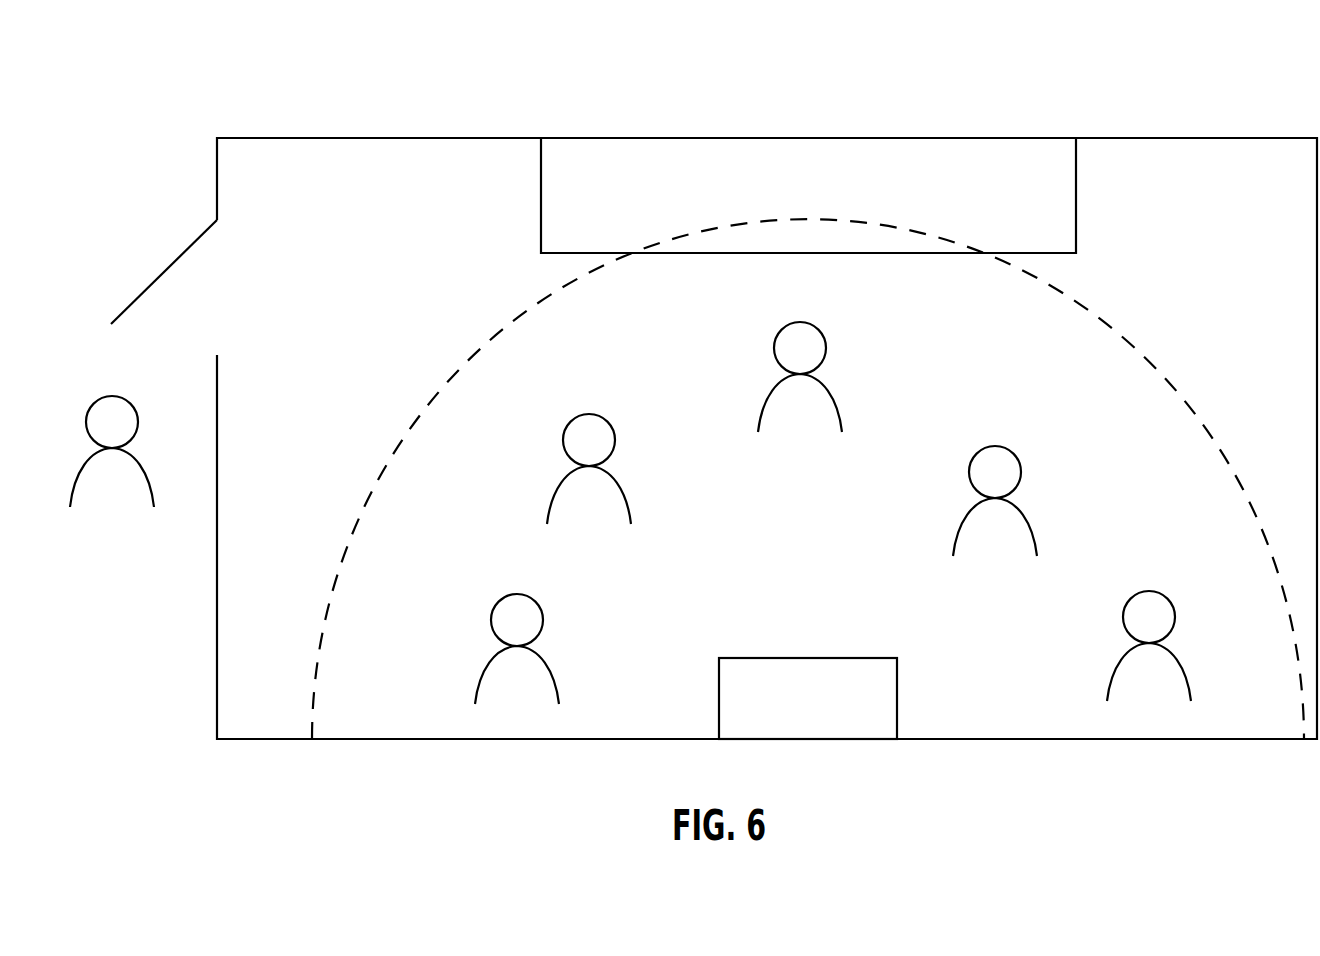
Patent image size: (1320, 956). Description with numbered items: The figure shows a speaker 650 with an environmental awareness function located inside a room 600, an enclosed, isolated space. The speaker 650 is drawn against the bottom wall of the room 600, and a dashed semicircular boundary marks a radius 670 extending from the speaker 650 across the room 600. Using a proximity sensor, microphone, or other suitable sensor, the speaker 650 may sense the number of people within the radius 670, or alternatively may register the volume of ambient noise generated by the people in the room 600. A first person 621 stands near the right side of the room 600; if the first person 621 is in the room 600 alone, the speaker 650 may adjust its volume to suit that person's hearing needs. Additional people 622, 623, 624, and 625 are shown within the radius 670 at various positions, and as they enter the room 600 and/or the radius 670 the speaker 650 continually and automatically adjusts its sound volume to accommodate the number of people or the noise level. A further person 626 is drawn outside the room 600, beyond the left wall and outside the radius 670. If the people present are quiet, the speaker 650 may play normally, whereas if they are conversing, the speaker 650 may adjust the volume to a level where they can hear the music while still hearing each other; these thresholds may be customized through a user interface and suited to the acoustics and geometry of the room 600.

The room 600 is at (290, 128).
The radius 670 is at (509, 321).
The speaker 650 is at (825, 709).
The first person 621 is at (1167, 588).
The additional person 622 is at (1013, 442).
The additional person 623 is at (824, 326).
The additional person 624 is at (592, 408).
The additional person 625 is at (520, 590).
The person outside room 626 is at (115, 394).